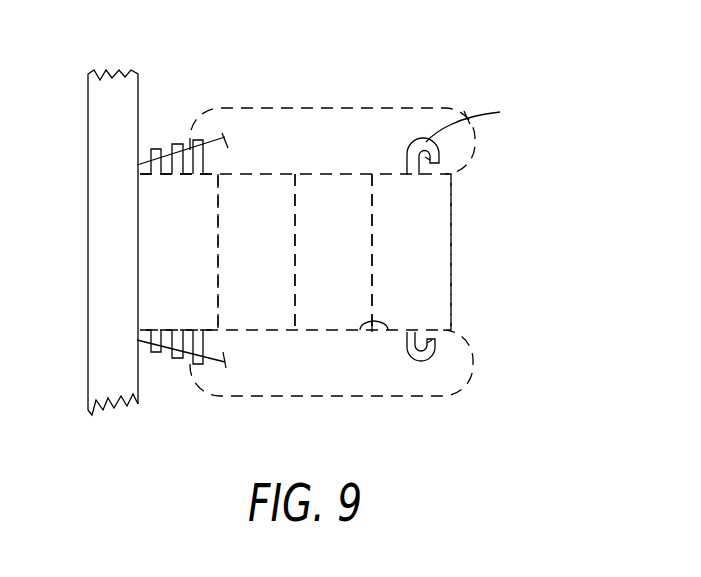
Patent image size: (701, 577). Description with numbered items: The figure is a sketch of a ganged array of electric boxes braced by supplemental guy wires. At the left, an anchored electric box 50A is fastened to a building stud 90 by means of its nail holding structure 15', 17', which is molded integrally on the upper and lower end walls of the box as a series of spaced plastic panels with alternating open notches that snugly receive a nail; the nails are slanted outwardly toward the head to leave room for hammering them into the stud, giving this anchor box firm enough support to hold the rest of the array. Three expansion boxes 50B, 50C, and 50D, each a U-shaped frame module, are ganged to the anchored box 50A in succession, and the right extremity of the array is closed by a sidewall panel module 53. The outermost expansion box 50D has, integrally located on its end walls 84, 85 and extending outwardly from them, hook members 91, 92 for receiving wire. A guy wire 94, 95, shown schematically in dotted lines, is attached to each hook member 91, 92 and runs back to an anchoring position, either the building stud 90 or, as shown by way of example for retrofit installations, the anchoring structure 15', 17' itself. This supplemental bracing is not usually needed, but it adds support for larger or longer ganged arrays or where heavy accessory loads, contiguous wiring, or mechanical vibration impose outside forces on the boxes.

The building stud 90 is at (128, 405).
The nail holding structure 17' is at (182, 110).
The nail holding structure 15' is at (181, 383).
The sidewall panel module 53 is at (456, 220).
The anchored electric box 50A is at (179, 252).
The expansion box 50B is at (256, 252).
The expansion box 50C is at (333, 252).
The expansion box 50D is at (411, 252).
The guy wire 94 is at (331, 110).
The guy wire 95 is at (335, 395).
The end wall 84 is at (432, 172).
The end wall 85 is at (367, 343).
The hook member 91 is at (474, 120).
The hook member 92 is at (432, 357).